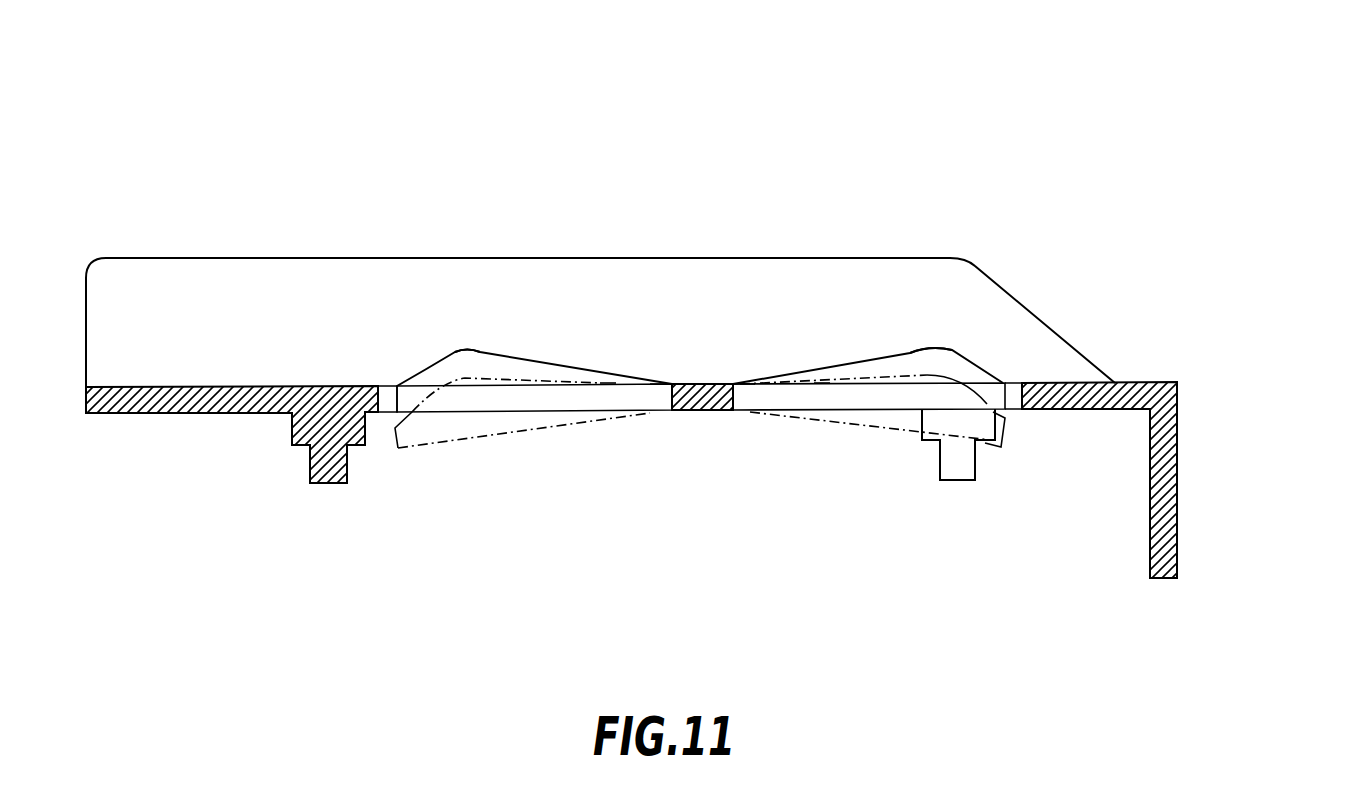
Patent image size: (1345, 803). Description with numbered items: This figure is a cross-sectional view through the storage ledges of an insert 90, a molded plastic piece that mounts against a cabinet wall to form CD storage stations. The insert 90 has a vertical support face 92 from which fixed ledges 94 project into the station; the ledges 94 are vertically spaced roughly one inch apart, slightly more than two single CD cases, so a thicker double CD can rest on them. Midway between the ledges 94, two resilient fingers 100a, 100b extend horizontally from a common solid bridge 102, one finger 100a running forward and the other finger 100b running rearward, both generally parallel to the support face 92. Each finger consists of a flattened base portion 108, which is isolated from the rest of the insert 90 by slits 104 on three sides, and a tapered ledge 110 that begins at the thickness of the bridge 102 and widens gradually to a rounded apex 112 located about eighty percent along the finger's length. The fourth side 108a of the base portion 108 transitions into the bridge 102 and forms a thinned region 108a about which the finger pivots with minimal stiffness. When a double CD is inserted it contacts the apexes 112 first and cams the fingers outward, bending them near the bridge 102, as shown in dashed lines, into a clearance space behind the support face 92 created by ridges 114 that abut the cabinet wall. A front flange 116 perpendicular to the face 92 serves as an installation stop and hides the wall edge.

The insert 90 is at (410, 161).
The vertical support face 92 is at (167, 413).
The fixed ledge 94 is at (640, 283).
The finger 100a is at (824, 375).
The finger 100b is at (607, 380).
The bridge 102 is at (707, 410).
The slit 104 is at (575, 400).
The base portion 108 is at (487, 412).
The region 108a is at (653, 400).
The tapered ledge 110 is at (513, 357).
The rounded apex 112 is at (460, 348).
The ridge 114 is at (323, 485).
The front flange 116 is at (1177, 538).